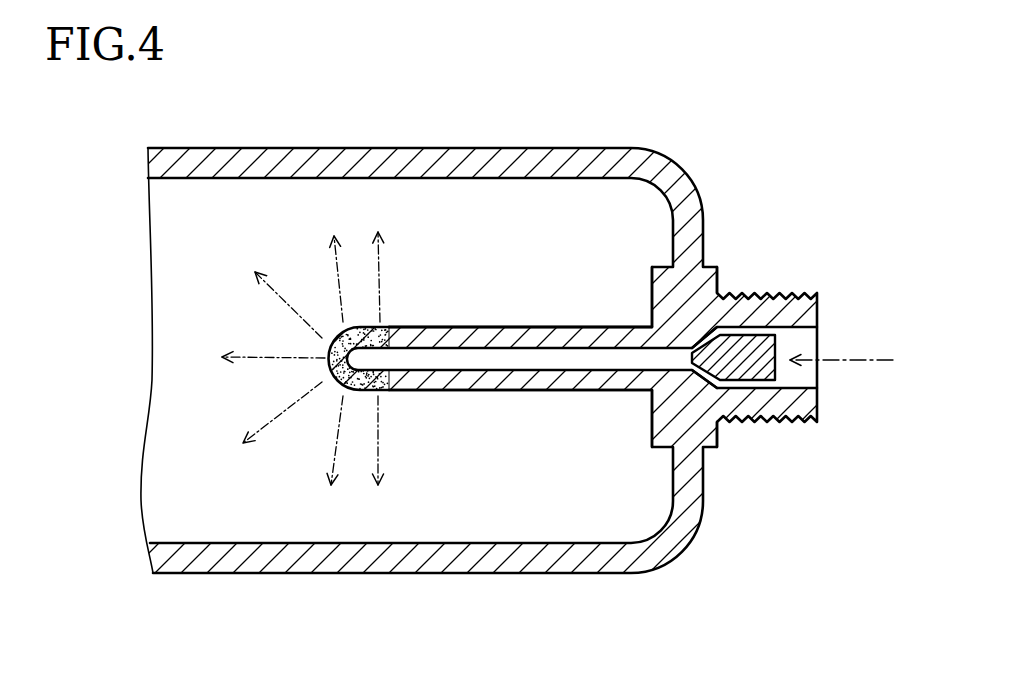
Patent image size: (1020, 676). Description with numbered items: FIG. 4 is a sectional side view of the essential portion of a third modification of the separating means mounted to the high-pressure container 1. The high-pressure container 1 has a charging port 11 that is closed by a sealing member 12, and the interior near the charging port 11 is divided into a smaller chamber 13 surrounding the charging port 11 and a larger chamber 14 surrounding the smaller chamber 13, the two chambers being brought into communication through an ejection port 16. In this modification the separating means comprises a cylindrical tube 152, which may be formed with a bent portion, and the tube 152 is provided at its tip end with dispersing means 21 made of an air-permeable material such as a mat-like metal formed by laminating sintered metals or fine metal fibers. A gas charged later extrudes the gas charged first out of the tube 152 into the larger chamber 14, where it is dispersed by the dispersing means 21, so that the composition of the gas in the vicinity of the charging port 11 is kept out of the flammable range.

The high-pressure container 1 is at (458, 323).
The charging port 11 is at (687, 362).
The sealing member 12 is at (748, 350).
The smaller chamber 13 is at (521, 362).
The larger chamber 14 is at (232, 246).
The cylindrical tube 152 is at (571, 325).
The ejection port 16 is at (392, 360).
The dispersing means 21 is at (360, 392).